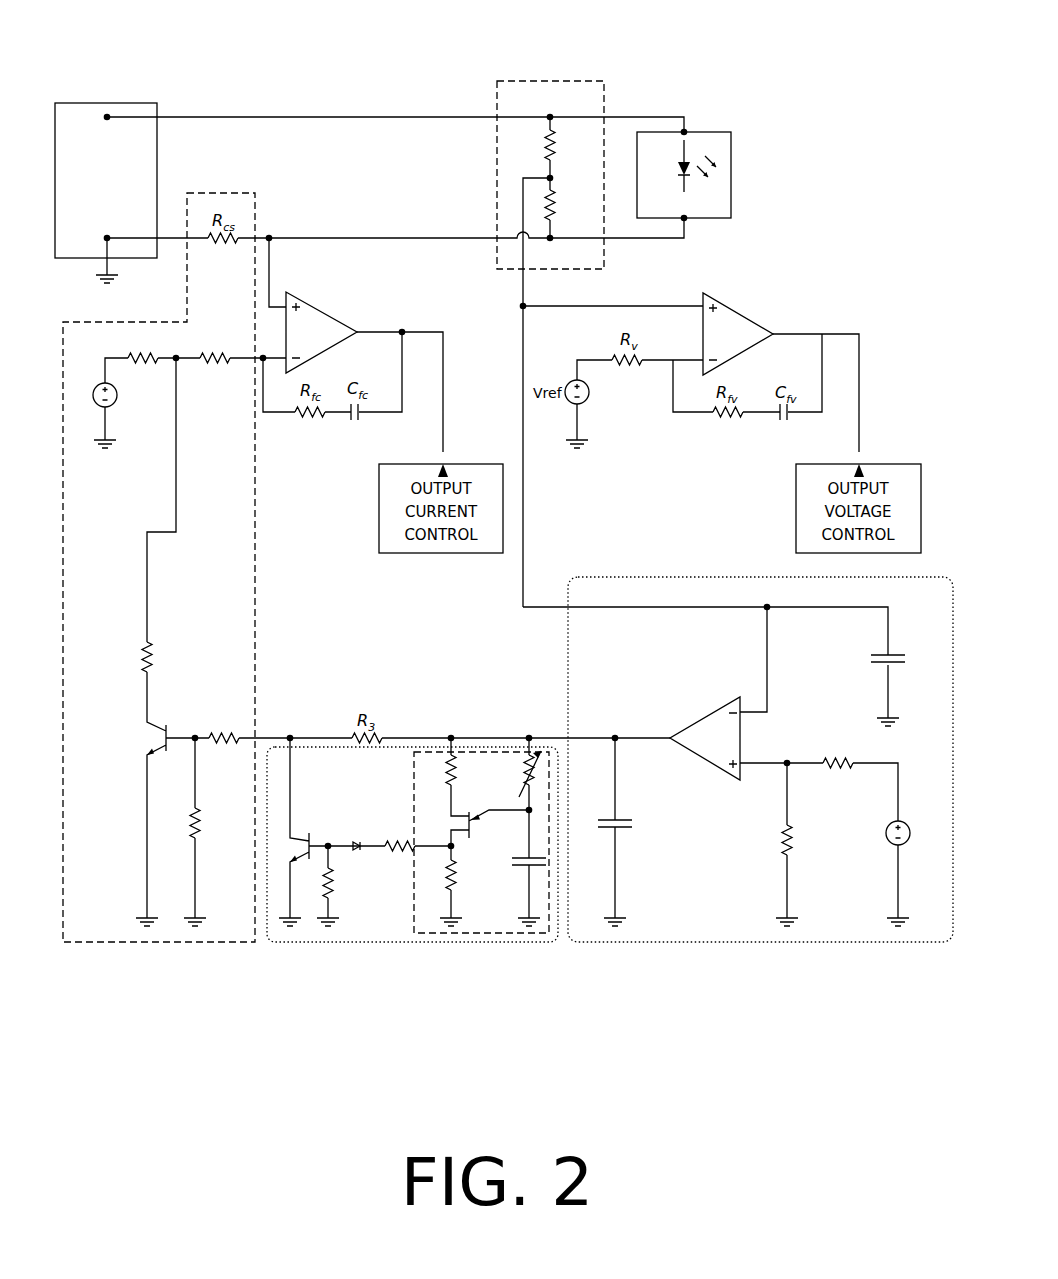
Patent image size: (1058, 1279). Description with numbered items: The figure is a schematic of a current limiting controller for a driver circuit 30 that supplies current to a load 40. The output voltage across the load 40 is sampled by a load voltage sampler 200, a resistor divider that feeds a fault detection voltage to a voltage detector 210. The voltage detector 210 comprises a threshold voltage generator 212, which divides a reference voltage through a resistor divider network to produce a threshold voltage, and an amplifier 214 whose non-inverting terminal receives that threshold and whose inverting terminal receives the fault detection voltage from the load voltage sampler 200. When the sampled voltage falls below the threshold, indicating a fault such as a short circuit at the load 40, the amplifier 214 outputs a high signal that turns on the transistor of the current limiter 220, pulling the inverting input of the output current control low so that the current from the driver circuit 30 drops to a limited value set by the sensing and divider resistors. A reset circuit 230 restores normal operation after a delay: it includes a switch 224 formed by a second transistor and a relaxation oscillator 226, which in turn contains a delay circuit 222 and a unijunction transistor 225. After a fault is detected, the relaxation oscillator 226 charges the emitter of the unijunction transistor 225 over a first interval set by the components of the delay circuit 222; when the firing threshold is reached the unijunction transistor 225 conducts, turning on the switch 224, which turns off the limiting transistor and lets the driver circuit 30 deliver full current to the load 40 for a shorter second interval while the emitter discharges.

The driver circuit 30 is at (103, 102).
The load 40 is at (709, 130).
The load voltage sampler 200 is at (552, 80).
The voltage detector 210 is at (738, 761).
The threshold voltage generator 212 is at (700, 715).
The amplifier 214 is at (849, 880).
The current limiter 220 is at (388, 843).
The delay circuit 222 is at (501, 802).
The switch 224 is at (282, 860).
The unijunction transistor 225 is at (470, 843).
The relaxation oscillator 226 is at (474, 843).
The reset circuit 230 is at (255, 614).